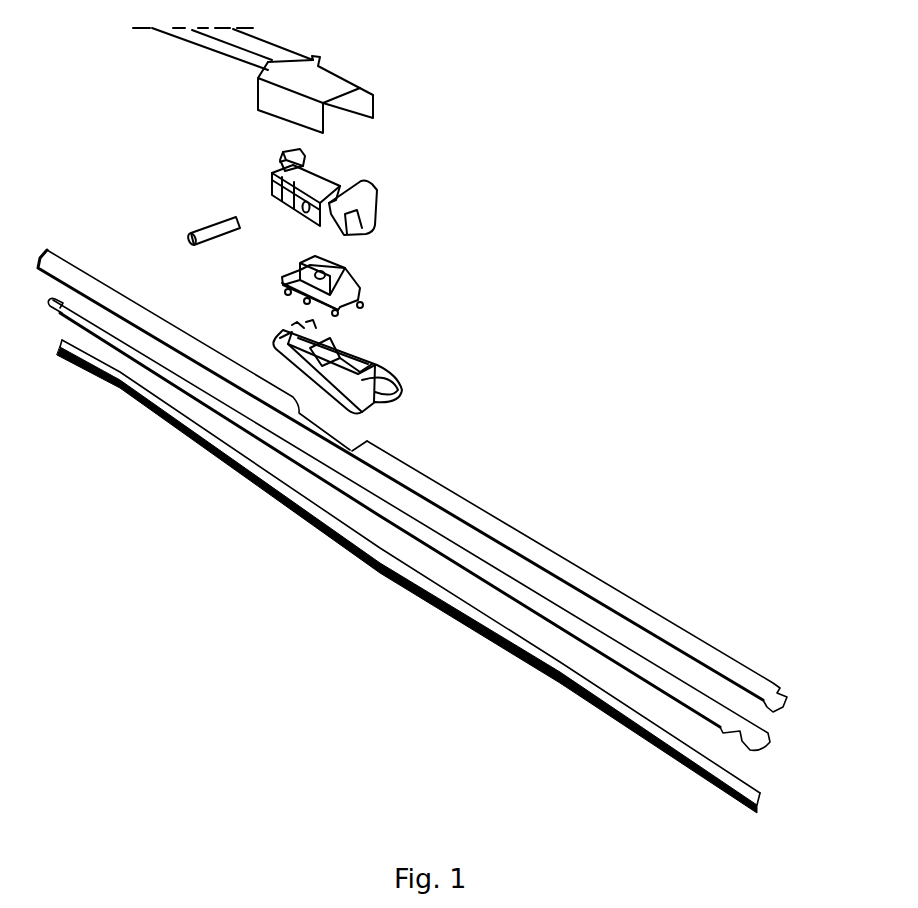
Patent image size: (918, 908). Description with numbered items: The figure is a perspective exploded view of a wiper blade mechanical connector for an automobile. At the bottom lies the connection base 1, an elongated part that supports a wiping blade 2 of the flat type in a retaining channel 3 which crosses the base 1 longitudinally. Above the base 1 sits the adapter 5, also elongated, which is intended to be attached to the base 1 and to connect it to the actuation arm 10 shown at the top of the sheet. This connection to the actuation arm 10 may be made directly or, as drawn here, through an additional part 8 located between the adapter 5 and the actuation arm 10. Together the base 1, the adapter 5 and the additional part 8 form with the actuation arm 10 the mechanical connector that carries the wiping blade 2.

The connection base 1 is at (402, 370).
The wiping blade 2 is at (790, 667).
The retaining channel 3 is at (390, 403).
The adapter 5 is at (367, 293).
The additional part 8 is at (173, 143).
The actuation arm 10 is at (270, 50).